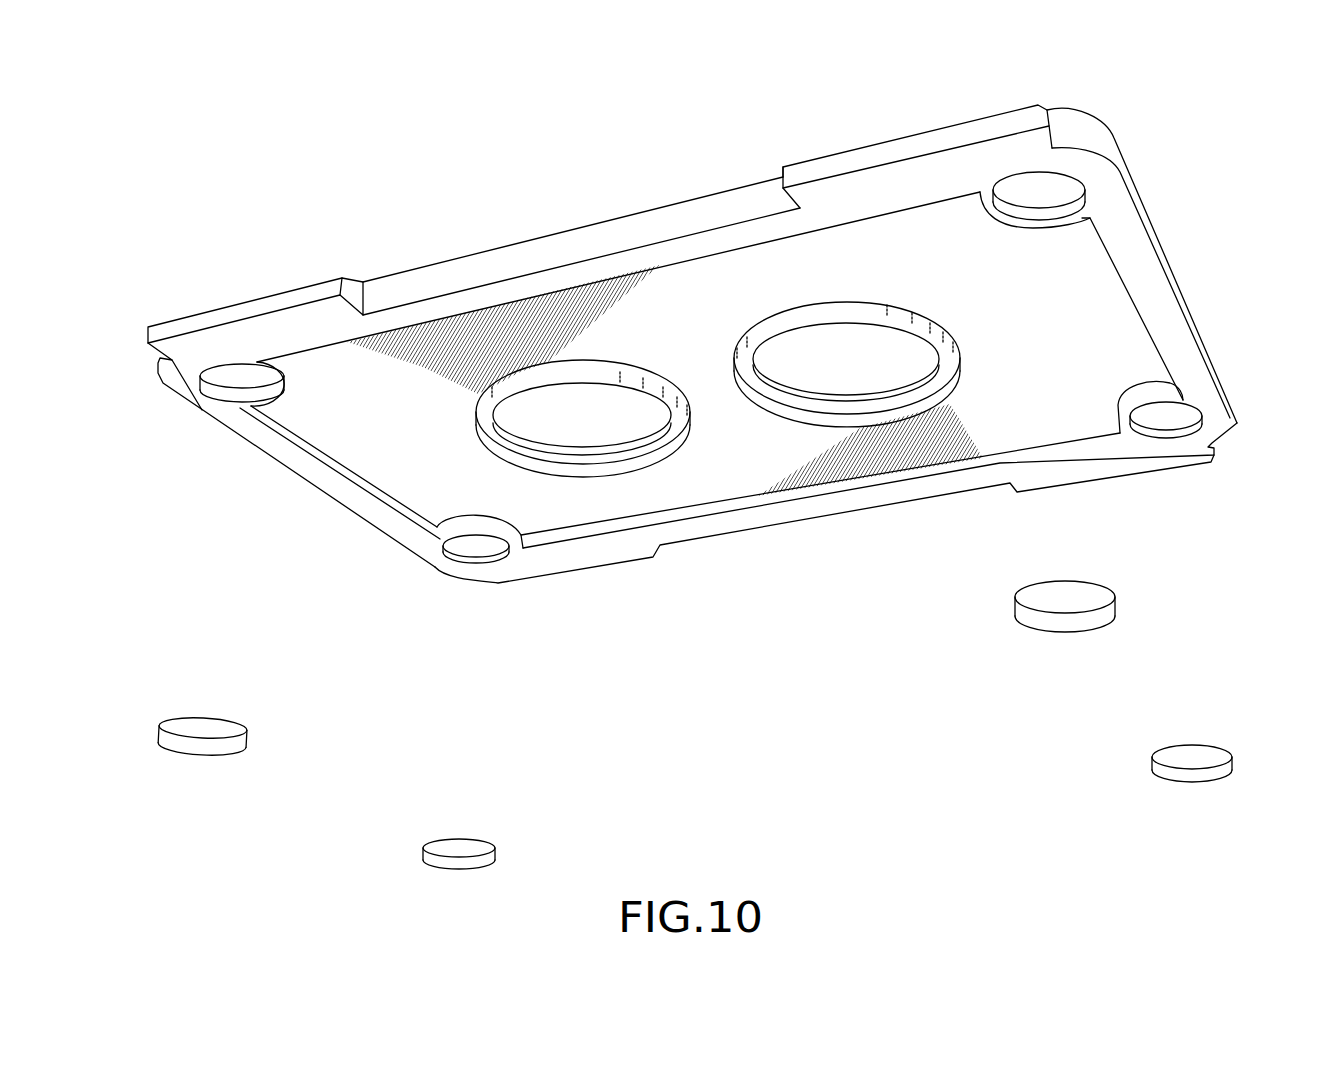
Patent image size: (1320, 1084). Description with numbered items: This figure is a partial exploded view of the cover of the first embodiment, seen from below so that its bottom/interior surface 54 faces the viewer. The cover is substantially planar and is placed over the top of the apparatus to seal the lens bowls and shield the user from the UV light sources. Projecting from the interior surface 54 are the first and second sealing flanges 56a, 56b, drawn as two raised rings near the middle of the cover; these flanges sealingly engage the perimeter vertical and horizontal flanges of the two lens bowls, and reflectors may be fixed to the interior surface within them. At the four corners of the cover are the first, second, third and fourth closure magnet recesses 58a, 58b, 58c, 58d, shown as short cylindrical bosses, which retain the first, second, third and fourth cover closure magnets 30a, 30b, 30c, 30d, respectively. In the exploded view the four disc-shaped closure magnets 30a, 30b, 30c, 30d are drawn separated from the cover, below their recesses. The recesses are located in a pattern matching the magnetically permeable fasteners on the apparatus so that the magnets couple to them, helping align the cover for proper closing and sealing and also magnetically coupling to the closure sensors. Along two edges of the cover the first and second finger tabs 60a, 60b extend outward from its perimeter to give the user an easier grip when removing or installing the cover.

The first cover closure magnet 30a is at (1192, 745).
The second cover closure magnet 30b is at (1067, 616).
The third cover closure magnet 30c is at (205, 717).
The fourth cover closure magnet 30d is at (460, 838).
The cover bottom/interior surface 54 is at (418, 425).
The cover first sealing flange 56a is at (817, 317).
The cover second sealing flange 56b is at (552, 375).
The first closure magnet recess 58a is at (1163, 425).
The second closure magnet recess 58b is at (1037, 193).
The third closure magnet recess 58c is at (238, 375).
The fourth closure magnet recess 58d is at (470, 543).
The cover first finger tab 60a is at (893, 138).
The cover second finger tab 60b is at (267, 307).